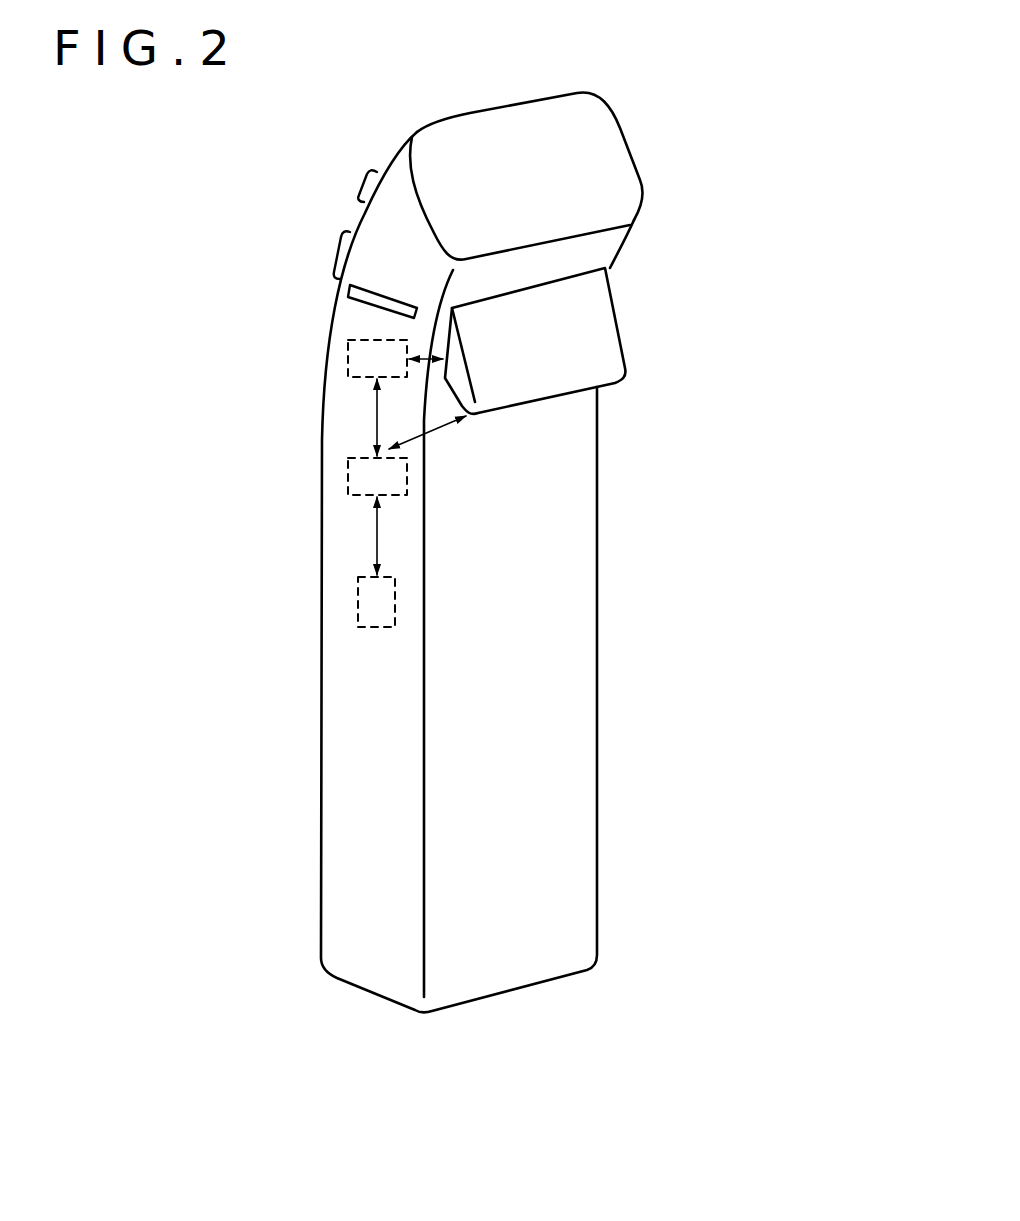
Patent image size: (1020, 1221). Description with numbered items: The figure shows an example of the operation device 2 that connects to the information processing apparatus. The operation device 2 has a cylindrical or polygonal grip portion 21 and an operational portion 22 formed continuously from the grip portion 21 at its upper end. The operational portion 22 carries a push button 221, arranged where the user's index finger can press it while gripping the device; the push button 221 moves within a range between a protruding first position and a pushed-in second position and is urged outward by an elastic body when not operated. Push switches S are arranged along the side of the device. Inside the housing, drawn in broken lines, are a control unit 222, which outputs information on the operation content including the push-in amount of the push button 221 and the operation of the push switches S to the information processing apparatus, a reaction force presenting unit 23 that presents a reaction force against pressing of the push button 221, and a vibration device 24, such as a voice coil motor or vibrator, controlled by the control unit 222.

The operation device 2 is at (737, 779).
The grip portion 21 is at (614, 568).
The operational portion 22 is at (646, 148).
The push button 221 is at (578, 329).
The reaction force presenting unit 23 is at (347, 358).
The control unit 222 is at (347, 480).
The vibration device 24 is at (357, 598).
The push switches S is at (361, 179).